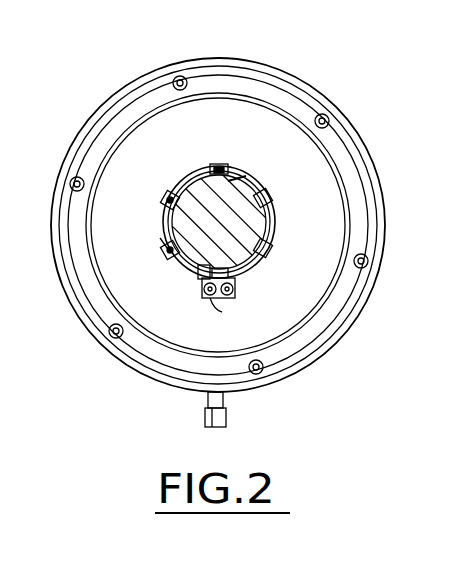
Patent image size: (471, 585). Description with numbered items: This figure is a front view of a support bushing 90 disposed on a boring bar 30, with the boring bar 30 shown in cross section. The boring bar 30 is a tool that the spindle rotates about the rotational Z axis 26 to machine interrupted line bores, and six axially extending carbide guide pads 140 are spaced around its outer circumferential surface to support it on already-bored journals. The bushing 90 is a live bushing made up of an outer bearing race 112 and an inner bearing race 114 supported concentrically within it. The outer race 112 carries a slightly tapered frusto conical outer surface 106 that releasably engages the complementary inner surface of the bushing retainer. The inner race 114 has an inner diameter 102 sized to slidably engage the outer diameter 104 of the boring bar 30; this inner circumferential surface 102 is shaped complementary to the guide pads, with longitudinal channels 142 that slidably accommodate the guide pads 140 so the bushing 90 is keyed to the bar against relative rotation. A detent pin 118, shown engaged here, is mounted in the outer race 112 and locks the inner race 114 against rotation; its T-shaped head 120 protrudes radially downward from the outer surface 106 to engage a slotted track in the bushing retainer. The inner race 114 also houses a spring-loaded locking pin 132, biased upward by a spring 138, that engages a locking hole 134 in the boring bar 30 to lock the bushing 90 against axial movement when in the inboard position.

The rotational Z axis 26 is at (220, 226).
The boring bar 30 is at (240, 179).
The support bushing 90 is at (260, 66).
The inner diameter 102 is at (164, 222).
The outer diameter 104 is at (166, 243).
The frusto conical outer surface 106 is at (323, 350).
The outer bearing race 112 is at (352, 187).
The inner bearing race 114 is at (313, 160).
The detent pin 118 is at (229, 416).
The T-shaped head 120 is at (205, 414).
The locking pin 132 is at (237, 283).
The locking hole 134 is at (203, 270).
The spring 138 is at (222, 312).
The carbide guide pads 140 is at (215, 168).
The longitudinal channels 142 is at (231, 166).